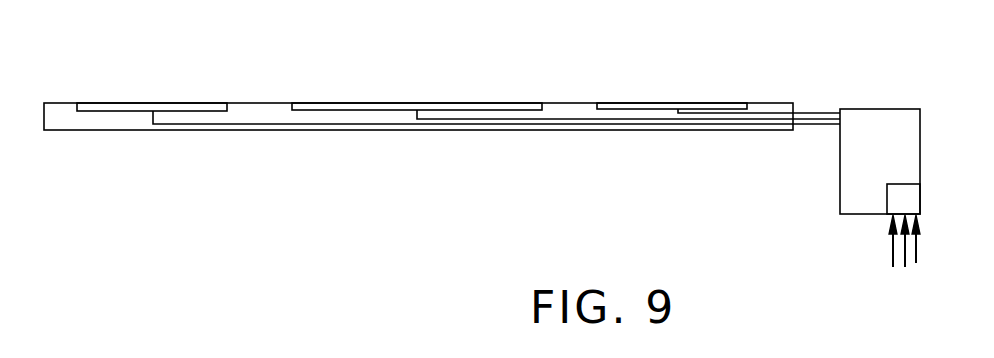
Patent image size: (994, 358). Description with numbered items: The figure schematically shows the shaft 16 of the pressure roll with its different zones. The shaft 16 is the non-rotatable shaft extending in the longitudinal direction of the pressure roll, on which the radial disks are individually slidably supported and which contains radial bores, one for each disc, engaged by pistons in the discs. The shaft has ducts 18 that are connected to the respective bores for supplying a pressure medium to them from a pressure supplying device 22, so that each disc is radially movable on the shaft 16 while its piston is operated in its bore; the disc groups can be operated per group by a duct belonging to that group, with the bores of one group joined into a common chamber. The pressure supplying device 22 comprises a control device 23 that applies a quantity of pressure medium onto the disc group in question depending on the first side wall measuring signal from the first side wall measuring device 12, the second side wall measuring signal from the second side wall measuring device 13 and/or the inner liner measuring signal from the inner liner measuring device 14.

The first side wall measuring device 12 is at (917, 256).
The second side wall measuring device 13 is at (892, 253).
The inner liner measuring device 14 is at (904, 268).
The shaft 16 is at (58, 115).
The ducts 18 is at (812, 118).
The pressure supplying device 22 is at (898, 127).
The control device 23 is at (907, 194).